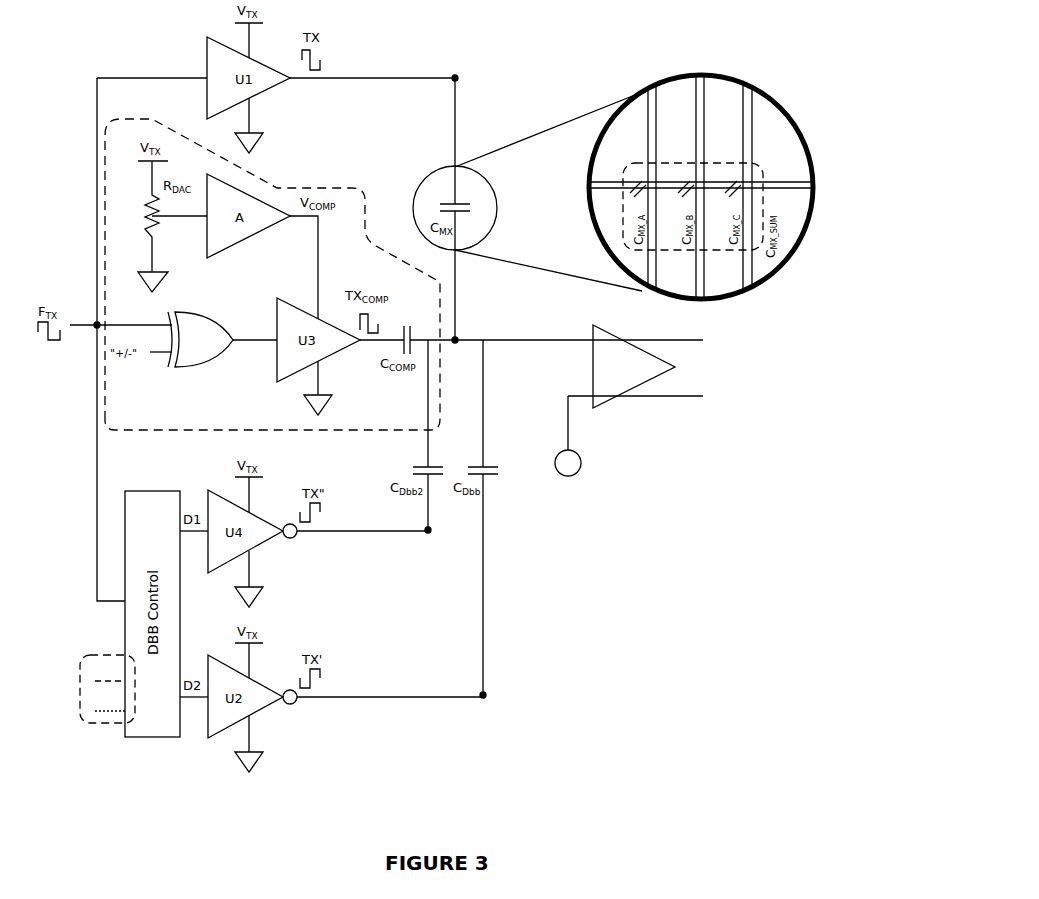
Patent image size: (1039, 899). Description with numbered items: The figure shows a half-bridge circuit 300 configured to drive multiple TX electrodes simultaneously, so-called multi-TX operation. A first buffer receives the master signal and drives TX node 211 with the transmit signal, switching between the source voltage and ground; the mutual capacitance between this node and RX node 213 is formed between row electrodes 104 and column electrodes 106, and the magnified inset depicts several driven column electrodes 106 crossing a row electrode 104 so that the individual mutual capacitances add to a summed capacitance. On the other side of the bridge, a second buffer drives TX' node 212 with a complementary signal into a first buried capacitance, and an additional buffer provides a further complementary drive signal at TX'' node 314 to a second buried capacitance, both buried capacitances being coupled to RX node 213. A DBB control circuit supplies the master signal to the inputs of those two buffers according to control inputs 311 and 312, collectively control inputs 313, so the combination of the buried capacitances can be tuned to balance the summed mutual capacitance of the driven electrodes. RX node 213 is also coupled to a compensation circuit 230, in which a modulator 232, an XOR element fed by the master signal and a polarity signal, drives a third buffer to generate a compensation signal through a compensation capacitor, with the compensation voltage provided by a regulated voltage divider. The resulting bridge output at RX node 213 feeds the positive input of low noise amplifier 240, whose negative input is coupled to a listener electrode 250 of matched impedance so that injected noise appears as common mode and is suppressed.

The row electrode 104 is at (700, 175).
The column electrodes 106 is at (692, 190).
The TX node 211 is at (453, 59).
The TX' node 212 is at (480, 716).
The RX node 213 is at (475, 313).
The compensation circuit 230 is at (108, 412).
The modulator 232 is at (200, 339).
The low noise amplifier 240 is at (634, 366).
The listener electrode 250 is at (573, 462).
The half-bridge circuit 300 is at (703, 639).
The control input 311 is at (109, 673).
The control input 312 is at (109, 702).
The control inputs 313 is at (88, 657).
The TX'' node 314 is at (425, 550).